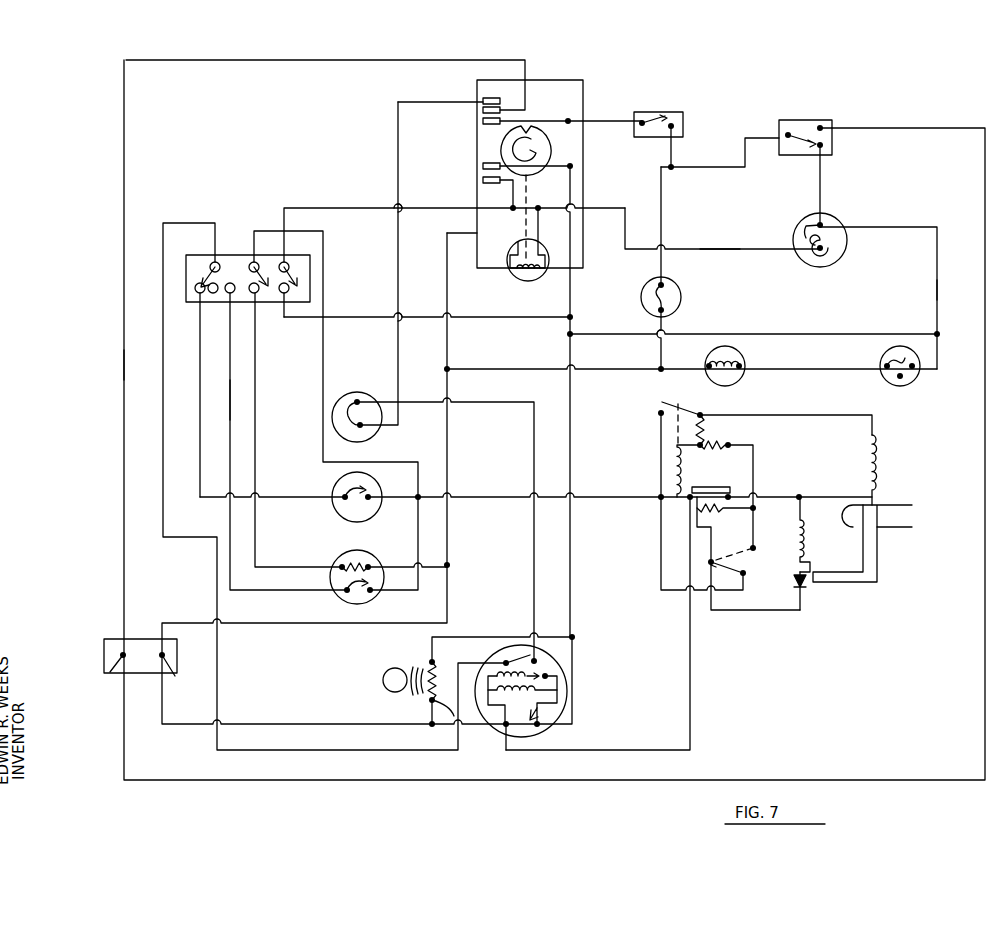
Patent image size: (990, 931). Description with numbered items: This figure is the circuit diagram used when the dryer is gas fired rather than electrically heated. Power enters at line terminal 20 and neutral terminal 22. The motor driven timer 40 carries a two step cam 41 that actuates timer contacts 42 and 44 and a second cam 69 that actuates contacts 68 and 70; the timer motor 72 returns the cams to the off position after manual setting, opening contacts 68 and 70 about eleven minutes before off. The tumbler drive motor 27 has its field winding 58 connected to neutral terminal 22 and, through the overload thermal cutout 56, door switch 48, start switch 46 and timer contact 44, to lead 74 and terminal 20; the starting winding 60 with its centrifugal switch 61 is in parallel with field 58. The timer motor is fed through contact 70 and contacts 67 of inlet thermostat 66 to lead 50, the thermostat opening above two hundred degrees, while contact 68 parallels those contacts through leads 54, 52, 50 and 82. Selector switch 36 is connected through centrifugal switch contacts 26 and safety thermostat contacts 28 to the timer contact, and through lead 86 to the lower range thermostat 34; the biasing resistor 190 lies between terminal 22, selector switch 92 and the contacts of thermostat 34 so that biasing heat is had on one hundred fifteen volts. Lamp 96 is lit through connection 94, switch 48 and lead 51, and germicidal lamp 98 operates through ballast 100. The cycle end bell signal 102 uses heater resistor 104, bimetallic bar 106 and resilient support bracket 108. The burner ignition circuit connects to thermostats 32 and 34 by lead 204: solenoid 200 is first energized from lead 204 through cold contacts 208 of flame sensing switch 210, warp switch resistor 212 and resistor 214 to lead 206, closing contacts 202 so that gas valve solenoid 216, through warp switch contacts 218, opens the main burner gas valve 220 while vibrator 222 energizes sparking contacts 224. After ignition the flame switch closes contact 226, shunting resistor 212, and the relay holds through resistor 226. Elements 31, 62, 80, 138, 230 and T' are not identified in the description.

The line terminal 20 is at (105, 677).
The neutral terminal 22 is at (175, 677).
The centrifugal switch contacts 26 is at (516, 645).
The motor 27 is at (567, 695).
The safety thermostat contacts 28 is at (377, 428).
The terminal block 31 is at (236, 254).
The thermostat 32 is at (372, 509).
The thermostat 34 is at (374, 596).
The selector switch 36 is at (210, 268).
The motor driven timer 40 is at (526, 222).
The two step cam 41 is at (501, 150).
The timer contact 42 is at (483, 109).
The timer contact 44 is at (483, 121).
The start switch 46 is at (676, 114).
The door switch 48 is at (802, 122).
The lead 50 is at (822, 186).
The lead 51 is at (527, 373).
The lead 52 is at (938, 292).
The lead 54 is at (572, 622).
The motor overload thermal cutout 56 is at (533, 728).
The field winding 58 is at (506, 726).
The starting winding 60 is at (505, 662).
The centrifugal switch 61 is at (552, 669).
The conductor 62 is at (303, 724).
The inlet thermostat 66 is at (838, 255).
The inlet thermostat contacts 67 is at (812, 227).
The timer contact 68 is at (483, 166).
The second cam 69 is at (548, 150).
The timer contact 70 is at (483, 180).
The timer motor 72 is at (528, 282).
The lead 74 is at (126, 366).
The switch blade 80 is at (300, 269).
The lead 82 is at (734, 249).
The lead 86 is at (232, 388).
The selector switch 92 is at (262, 270).
The connection 94 is at (985, 612).
The lamp 96 is at (668, 283).
The germicidal lamp 98 is at (912, 378).
The ballast 100 is at (736, 380).
The cycle end bell signal 102 is at (384, 675).
The heater resistor 104 is at (431, 726).
The bimetallic bar 106 is at (413, 667).
The resilient support bracket 108 is at (430, 661).
The contact 138 is at (494, 97).
The biasing resistor 190 is at (366, 567).
The safety relay solenoid 200 is at (664, 470).
The relay contacts 202 is at (655, 407).
The lead 204 is at (637, 497).
The lead 206 is at (692, 706).
The cold contacts 208 is at (742, 577).
The flame sensing switch 210 is at (737, 570).
The warp switch resistor 212 is at (737, 513).
The resistor 214 is at (716, 455).
The gas valve solenoid 216 is at (878, 455).
The warp switch contacts 218 is at (712, 487).
The main burner gas valve 220 is at (868, 512).
The vibrator 222 is at (808, 533).
The sparking contacts 224 is at (797, 593).
The hot contact and holding resistor 226 is at (704, 430).
The capillary tube 230 is at (830, 582).
The thermostat T' is at (124, 643).